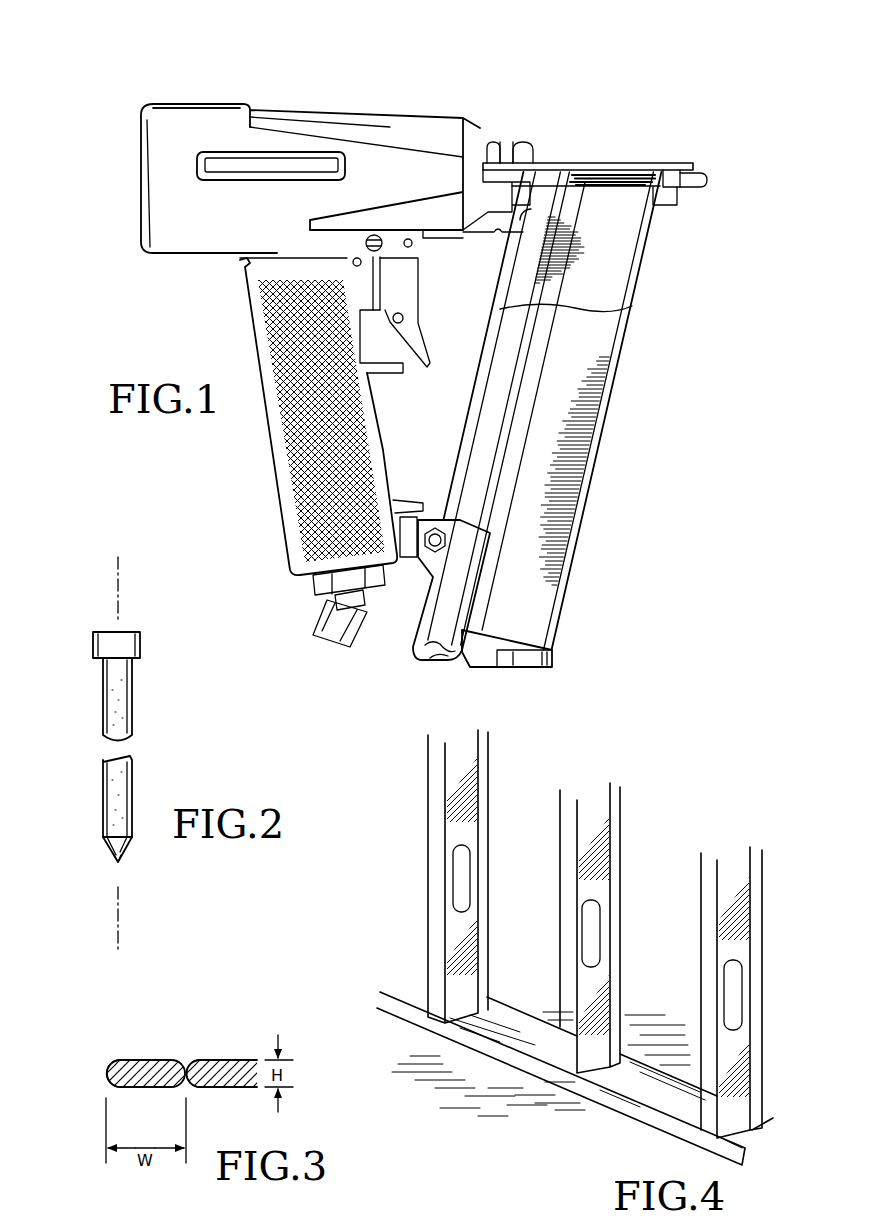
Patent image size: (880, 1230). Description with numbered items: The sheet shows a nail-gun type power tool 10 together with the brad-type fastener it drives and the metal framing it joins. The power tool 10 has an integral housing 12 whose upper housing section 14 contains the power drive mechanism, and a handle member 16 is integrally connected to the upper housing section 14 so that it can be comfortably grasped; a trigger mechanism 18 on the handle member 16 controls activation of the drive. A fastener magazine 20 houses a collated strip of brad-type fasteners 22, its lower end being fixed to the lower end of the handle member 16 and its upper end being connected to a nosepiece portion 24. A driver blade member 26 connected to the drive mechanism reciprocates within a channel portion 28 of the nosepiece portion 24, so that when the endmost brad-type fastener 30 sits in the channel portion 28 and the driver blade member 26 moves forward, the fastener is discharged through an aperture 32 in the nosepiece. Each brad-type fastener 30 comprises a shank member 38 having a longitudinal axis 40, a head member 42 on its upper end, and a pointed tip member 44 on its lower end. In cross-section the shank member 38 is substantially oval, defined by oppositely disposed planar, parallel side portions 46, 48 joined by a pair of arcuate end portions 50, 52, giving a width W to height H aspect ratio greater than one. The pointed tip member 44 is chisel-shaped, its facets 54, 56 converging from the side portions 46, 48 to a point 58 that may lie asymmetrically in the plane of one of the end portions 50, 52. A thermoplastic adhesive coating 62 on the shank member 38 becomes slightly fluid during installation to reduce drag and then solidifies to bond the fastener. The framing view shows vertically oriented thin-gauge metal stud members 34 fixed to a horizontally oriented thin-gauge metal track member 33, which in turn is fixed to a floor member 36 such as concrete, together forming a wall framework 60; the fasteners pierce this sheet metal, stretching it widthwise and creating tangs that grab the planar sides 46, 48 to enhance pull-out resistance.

In FIG. 1, the power tool 10 is at (427, 76).
In FIG. 1, the housing 12 is at (247, 263).
In FIG. 1, the upper housing section 14 is at (270, 143).
In FIG. 1, the handle member 16 is at (297, 423).
In FIG. 1, the trigger mechanism 18 is at (413, 295).
In FIG. 1, the fastener magazine 20 is at (583, 507).
In FIG. 1, the collated strip of brad-type fasteners 22 is at (607, 248).
In FIG. 1, the nosepiece portion 24 is at (668, 163).
In FIG. 1, the driver blade member 26 is at (515, 175).
In FIG. 1, the channel portion 28 is at (685, 168).
In FIG. 1, the brad-type fastener 30 is at (604, 172).
In FIG. 2, the brad-type fastener 30 is at (186, 648).
In FIG. 3, the brad-type fastener 30 is at (230, 984).
In FIG. 1, the aperture 32 is at (707, 172).
In FIG. 4, the metal track member 33 is at (465, 1040).
In FIG. 4, the metal stud member 34 is at (460, 829).
In FIG. 4, the floor member 36 is at (515, 1088).
In FIG. 2, the shank member 38 is at (128, 778).
In FIG. 3, the shank member 38 is at (160, 1062).
In FIG. 2, the longitudinal axis 40 is at (113, 588).
In FIG. 2, the head member 42 is at (120, 645).
In FIG. 2, the pointed tip member 44 is at (103, 828).
In FIG. 3, the planar side portion 46 is at (140, 1058).
In FIG. 3, the planar side portion 48 is at (145, 1088).
In FIG. 3, the arcuate end portion 50 is at (107, 1073).
In FIG. 3, the arcuate end portion 52 is at (203, 1063).
In FIG. 2, the facet 54 is at (110, 853).
In FIG. 2, the facet 56 is at (125, 848).
In FIG. 2, the point 58 is at (118, 865).
In FIG. 4, the wall framework 60 is at (618, 1106).
In FIG. 2, the thermoplastic adhesive coating 62 is at (132, 697).